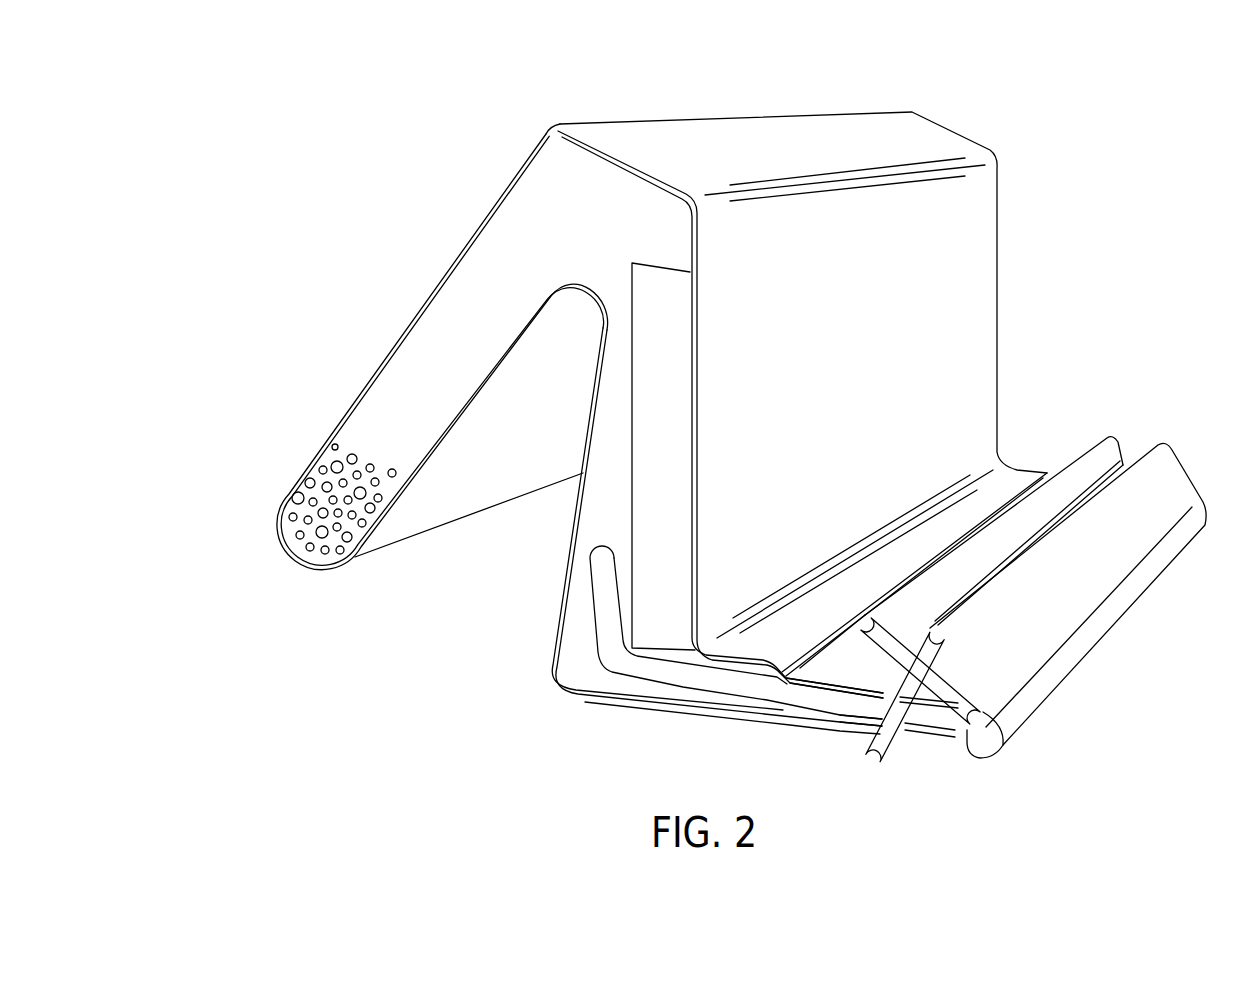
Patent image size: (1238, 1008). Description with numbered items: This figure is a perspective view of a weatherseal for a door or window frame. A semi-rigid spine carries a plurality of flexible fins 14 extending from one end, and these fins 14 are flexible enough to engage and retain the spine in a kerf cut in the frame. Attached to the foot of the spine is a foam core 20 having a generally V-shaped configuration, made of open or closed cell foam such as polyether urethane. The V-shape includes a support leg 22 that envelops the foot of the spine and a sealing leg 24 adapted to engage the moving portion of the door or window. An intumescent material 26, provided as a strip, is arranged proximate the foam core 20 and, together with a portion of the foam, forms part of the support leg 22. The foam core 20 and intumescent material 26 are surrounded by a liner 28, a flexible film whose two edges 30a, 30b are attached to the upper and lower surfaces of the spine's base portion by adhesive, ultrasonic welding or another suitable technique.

The flexible fins 14 is at (888, 744).
The foam core 20 is at (327, 461).
The support leg 22 is at (1088, 329).
The sealing leg 24 is at (318, 371).
The intumescent material 26 is at (643, 522).
The liner 28 is at (440, 503).
The edge of liner 30a is at (800, 685).
The edge of liner 30b is at (808, 718).